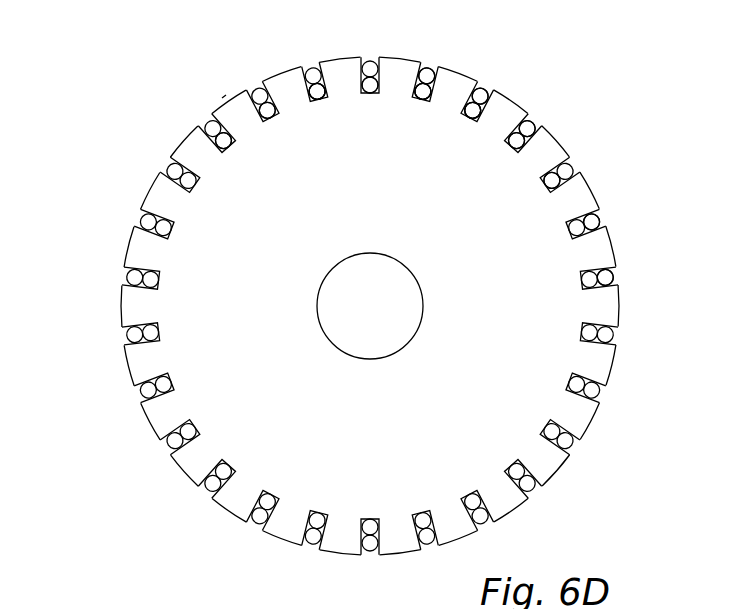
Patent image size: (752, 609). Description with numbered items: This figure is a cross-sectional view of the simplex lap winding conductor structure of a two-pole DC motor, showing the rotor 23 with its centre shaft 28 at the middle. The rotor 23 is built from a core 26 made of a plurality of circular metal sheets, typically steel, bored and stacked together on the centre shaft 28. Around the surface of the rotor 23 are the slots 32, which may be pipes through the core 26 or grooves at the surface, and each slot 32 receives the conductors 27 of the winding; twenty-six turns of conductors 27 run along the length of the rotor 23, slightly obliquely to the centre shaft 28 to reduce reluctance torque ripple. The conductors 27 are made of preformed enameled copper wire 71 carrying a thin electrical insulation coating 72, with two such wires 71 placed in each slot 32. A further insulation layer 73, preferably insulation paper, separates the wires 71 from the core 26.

The rotor 23 is at (181, 104).
The core 26 is at (235, 112).
The conductors 27 is at (410, 104).
The centre shaft 28 is at (348, 292).
The slots 32 is at (315, 99).
The enameled copper wire 71 is at (473, 114).
The electrical insulation coating 72 is at (527, 148).
The insulation layer 73 is at (598, 271).